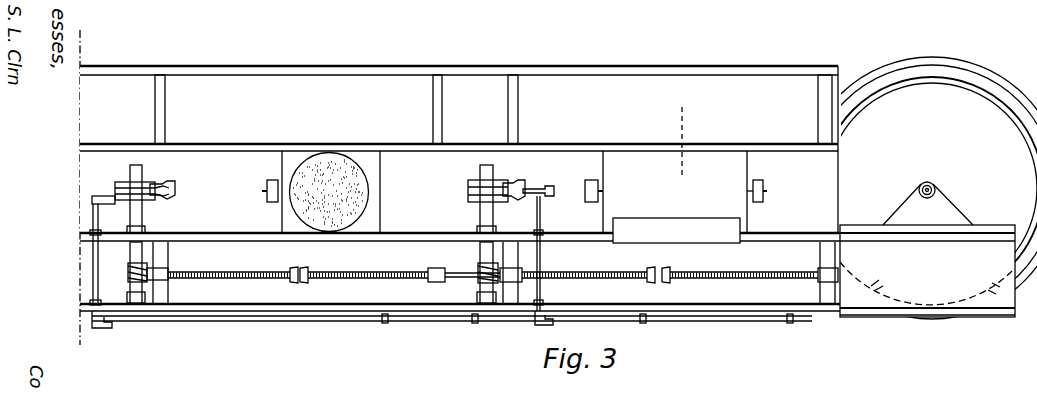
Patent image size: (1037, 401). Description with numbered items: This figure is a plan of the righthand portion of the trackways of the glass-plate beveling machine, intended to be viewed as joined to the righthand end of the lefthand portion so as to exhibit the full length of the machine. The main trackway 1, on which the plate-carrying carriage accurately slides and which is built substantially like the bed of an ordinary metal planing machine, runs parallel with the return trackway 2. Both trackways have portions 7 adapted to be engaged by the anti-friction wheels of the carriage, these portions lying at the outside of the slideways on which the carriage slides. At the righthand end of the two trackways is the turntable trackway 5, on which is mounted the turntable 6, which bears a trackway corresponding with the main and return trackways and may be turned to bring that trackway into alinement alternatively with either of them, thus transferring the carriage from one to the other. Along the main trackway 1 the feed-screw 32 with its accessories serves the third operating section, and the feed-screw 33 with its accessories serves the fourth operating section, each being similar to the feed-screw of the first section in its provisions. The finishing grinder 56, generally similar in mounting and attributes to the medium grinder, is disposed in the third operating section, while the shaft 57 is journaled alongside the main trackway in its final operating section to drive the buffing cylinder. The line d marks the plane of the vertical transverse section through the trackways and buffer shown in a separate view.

The main trackway 1 is at (185, 253).
The return trackway 2 is at (350, 73).
The turntable trackway 5 is at (933, 65).
The turntable 6 is at (953, 248).
The trackway portions 7 is at (603, 67).
The feed-screw 32 is at (365, 273).
The feed-screw 33 is at (730, 272).
The finishing grinder 56 is at (355, 193).
The shaft 57 is at (751, 181).
The line d is at (680, 130).